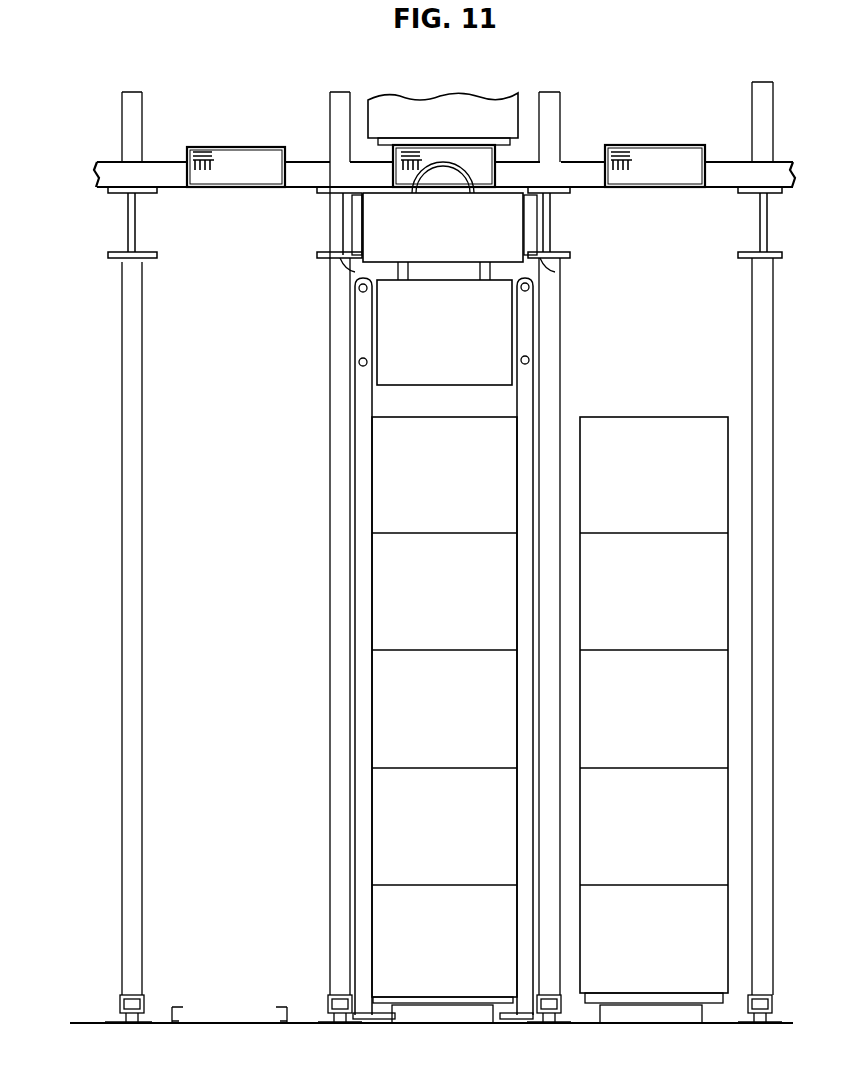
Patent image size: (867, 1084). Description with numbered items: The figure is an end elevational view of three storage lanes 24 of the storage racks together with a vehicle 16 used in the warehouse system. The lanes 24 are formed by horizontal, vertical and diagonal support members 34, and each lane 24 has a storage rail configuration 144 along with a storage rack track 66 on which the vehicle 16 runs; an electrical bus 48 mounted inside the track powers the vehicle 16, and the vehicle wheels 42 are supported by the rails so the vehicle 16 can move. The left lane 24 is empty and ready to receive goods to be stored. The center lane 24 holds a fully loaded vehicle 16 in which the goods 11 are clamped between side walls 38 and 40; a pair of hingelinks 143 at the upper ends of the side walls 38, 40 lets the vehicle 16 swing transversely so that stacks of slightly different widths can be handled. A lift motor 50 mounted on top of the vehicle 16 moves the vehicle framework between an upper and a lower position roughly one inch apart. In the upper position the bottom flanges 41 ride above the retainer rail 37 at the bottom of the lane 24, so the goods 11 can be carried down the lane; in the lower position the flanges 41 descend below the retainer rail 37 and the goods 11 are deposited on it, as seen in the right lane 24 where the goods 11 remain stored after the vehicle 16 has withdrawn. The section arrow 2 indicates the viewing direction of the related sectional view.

The section line arrow 2 is at (88, 805).
The goods 11 is at (430, 417).
The vehicle 16 is at (430, 248).
The storage lane 24 is at (162, 405).
The support members 34 is at (134, 548).
The retainer rail 37 is at (174, 1024).
The side wall 38 is at (362, 598).
The side wall 40 is at (522, 688).
The bottom flanges 41 is at (370, 1020).
The vehicle wheels 42 is at (362, 225).
The electrical bus 48 is at (200, 152).
The lift motor 50 is at (452, 186).
The storage rack track 66 is at (342, 263).
The hingelinks 143 is at (363, 322).
The storage rail configuration 144 is at (130, 226).